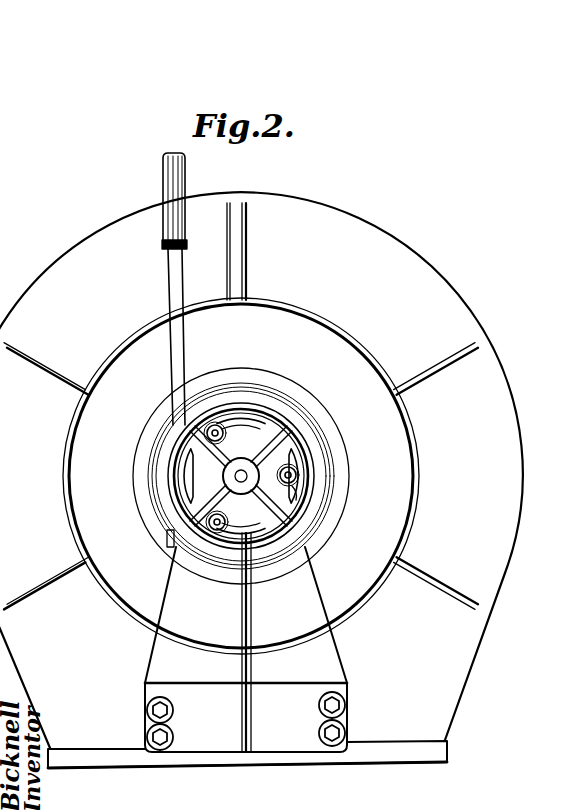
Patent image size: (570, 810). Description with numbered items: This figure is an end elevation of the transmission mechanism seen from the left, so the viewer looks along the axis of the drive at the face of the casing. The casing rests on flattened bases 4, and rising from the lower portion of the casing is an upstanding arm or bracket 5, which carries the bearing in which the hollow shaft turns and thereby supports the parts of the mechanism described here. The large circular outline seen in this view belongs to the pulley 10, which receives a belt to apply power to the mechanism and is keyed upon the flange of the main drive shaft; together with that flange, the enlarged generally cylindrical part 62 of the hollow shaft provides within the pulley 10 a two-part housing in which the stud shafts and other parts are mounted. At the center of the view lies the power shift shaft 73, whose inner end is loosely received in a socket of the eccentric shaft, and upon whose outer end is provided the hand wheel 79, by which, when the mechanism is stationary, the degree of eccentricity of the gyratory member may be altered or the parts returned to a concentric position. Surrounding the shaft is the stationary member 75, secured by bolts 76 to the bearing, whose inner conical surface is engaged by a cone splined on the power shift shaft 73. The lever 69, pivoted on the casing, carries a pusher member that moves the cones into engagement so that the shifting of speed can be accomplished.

The flattened bases 4 is at (430, 745).
The upstanding arm or bracket 5 is at (320, 645).
The pulley 10 is at (297, 322).
The enlarged generally cylindrical part of sleeve or hollow shaft 62 is at (156, 415).
The lever 69 is at (170, 272).
The power shift shaft 73 is at (236, 478).
The stationary member 75 is at (293, 492).
The bolts 76 is at (216, 424).
The hand wheel 79 is at (286, 412).